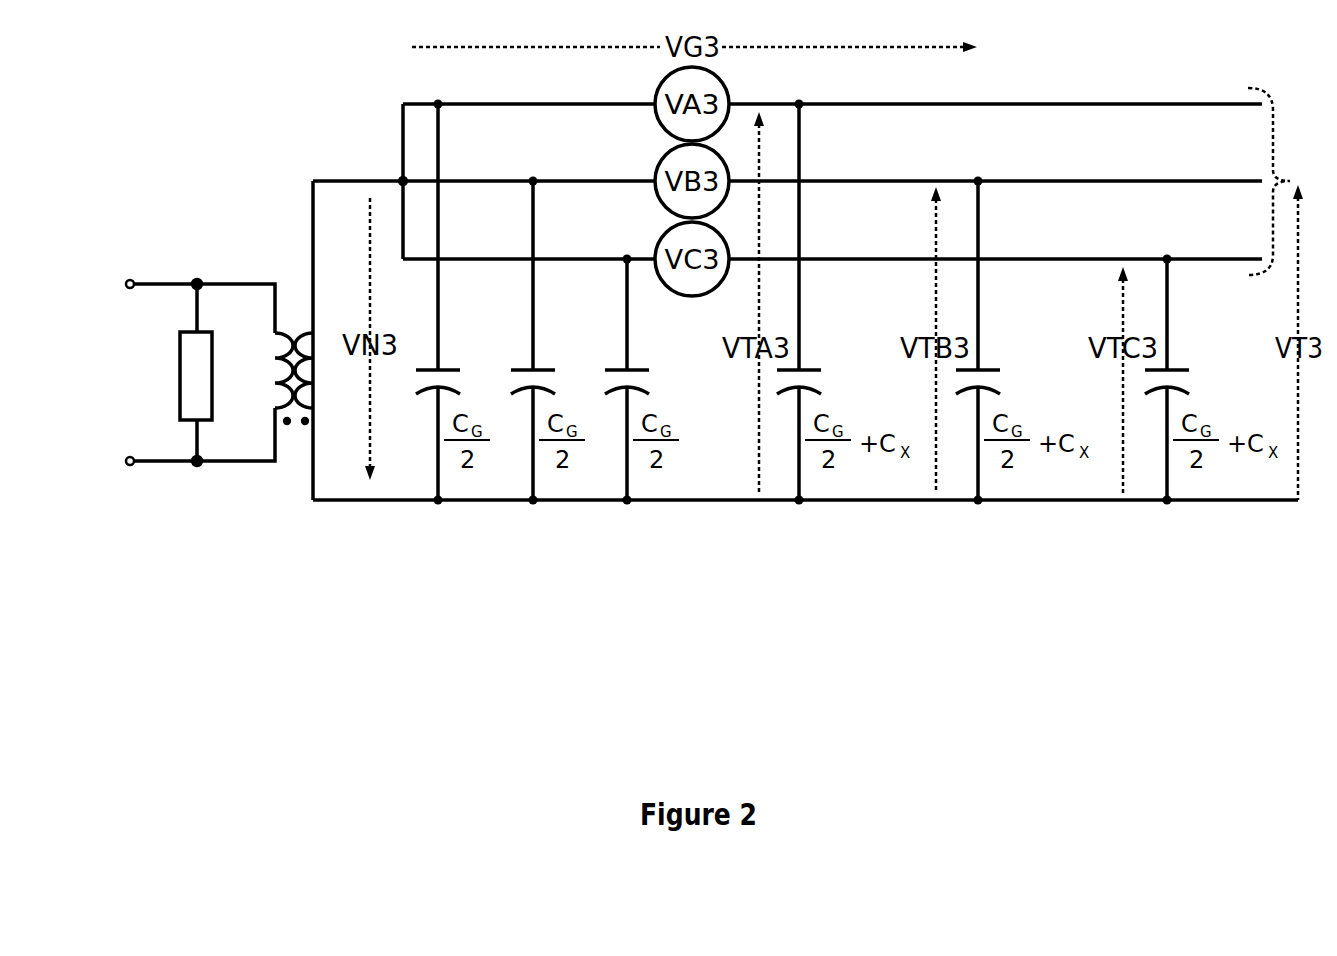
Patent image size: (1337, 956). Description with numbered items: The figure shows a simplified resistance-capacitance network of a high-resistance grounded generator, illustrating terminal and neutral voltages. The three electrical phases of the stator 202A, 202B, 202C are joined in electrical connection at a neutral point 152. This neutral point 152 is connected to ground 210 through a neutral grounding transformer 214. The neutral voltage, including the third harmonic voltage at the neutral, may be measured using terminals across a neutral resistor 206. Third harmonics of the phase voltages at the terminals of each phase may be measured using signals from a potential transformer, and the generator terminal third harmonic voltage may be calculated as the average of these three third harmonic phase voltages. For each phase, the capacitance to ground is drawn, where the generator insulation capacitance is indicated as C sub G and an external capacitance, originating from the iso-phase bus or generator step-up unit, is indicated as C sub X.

The neutral resistor 206 is at (180, 360).
The neutral grounding transformer 214 is at (300, 338).
The neutral point 152 is at (401, 180).
The stator electrical phase 202A is at (1135, 86).
The stator electrical phase 202B is at (1095, 181).
The stator electrical phase 202C is at (1197, 259).
The ground 210 is at (1250, 504).